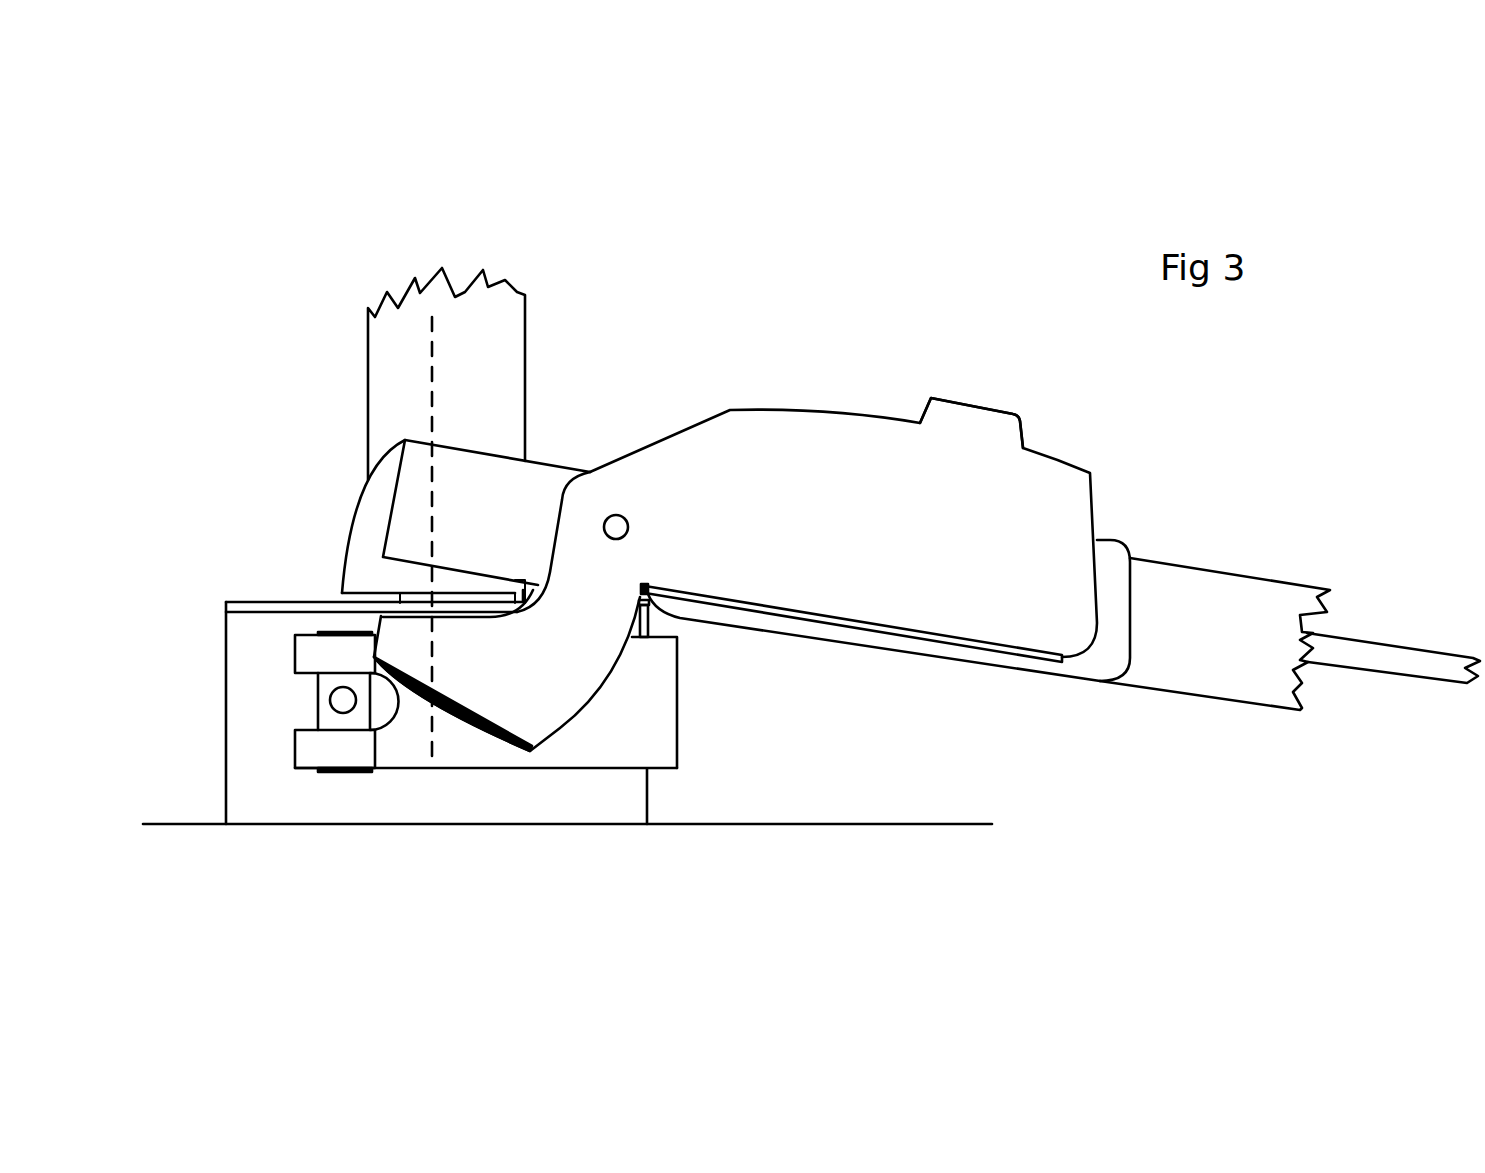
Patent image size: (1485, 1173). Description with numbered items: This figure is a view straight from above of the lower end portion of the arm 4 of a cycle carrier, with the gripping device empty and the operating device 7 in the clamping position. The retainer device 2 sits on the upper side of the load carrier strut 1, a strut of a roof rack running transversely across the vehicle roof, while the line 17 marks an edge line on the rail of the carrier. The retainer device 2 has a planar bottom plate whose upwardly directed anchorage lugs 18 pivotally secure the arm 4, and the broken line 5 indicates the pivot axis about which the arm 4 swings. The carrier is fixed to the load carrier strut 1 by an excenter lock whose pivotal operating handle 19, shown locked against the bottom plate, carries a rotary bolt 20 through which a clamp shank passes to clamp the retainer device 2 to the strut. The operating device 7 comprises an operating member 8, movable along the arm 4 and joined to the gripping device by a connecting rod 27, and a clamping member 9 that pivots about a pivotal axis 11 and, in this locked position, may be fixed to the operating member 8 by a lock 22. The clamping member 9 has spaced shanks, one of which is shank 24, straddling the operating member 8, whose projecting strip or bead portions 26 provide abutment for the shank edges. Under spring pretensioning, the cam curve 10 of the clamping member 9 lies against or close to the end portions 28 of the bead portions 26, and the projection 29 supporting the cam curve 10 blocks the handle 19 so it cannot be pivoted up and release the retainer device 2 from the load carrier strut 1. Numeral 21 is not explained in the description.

The load carrier strut 1 is at (383, 363).
The retainer device 2 is at (243, 705).
The arm 4 is at (1263, 598).
The broken line 5 is at (432, 368).
The operating device 7 is at (852, 250).
The operating member 8 is at (1110, 560).
The clamping member 9 is at (1110, 437).
The cam curve 10 is at (612, 675).
The pivotal axis 11 is at (616, 527).
The edge line 17 is at (875, 826).
The anchorage lugs 18 is at (257, 603).
The operating handle 19 is at (657, 727).
The rotary bolt 20 is at (325, 713).
The pivot pin 21 is at (343, 701).
The lock 22 is at (973, 410).
The shank 24 is at (1055, 625).
The strip or bead portions 26 is at (998, 658).
The connecting rod 27 is at (1412, 663).
The end portions 28 is at (648, 588).
The projection 29 is at (495, 703).